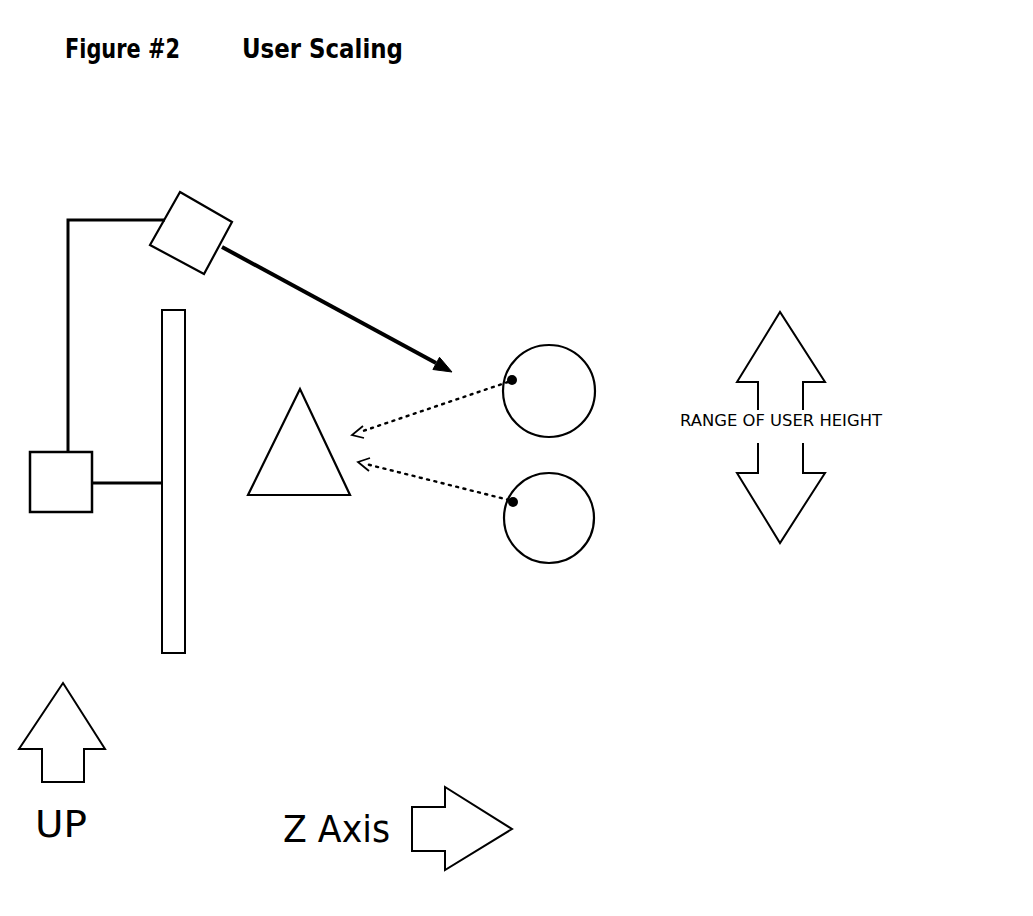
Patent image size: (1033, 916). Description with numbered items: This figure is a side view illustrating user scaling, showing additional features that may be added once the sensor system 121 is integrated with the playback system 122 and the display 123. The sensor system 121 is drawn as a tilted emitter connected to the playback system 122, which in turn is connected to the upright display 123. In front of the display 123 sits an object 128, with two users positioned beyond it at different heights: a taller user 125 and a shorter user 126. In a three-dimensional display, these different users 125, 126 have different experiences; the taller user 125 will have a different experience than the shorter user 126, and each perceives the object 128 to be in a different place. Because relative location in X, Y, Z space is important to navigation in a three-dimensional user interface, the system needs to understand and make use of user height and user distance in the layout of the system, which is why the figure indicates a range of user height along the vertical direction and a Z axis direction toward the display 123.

The sensor system 121 is at (260, 322).
The playback system 122 is at (96, 482).
The display 123 is at (170, 602).
The taller user 125 is at (473, 391).
The shorter user 126 is at (476, 510).
The object 128 is at (299, 442).